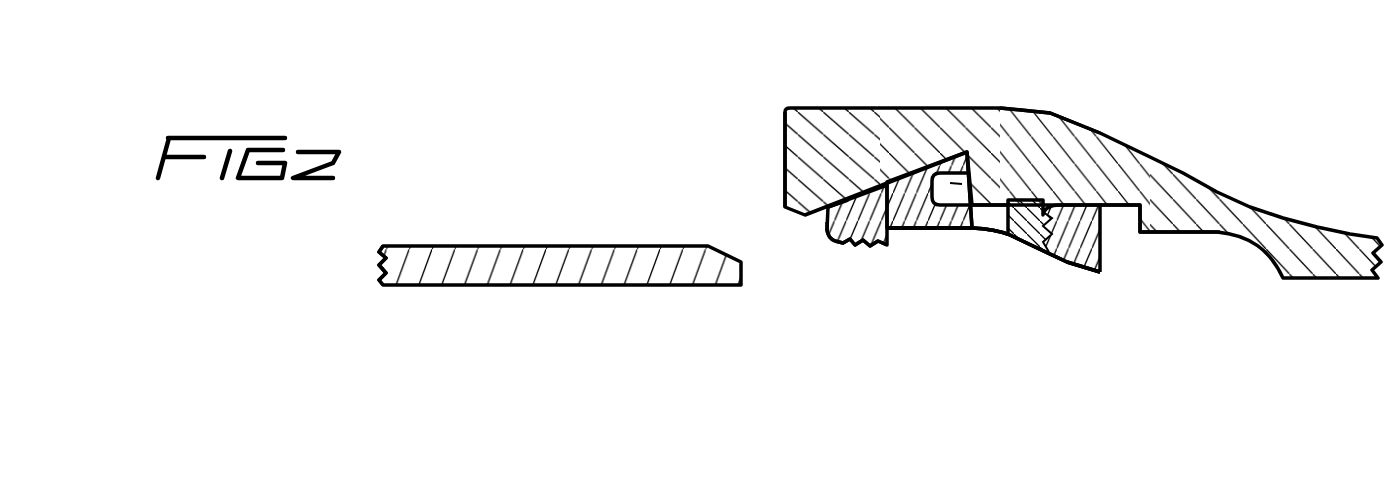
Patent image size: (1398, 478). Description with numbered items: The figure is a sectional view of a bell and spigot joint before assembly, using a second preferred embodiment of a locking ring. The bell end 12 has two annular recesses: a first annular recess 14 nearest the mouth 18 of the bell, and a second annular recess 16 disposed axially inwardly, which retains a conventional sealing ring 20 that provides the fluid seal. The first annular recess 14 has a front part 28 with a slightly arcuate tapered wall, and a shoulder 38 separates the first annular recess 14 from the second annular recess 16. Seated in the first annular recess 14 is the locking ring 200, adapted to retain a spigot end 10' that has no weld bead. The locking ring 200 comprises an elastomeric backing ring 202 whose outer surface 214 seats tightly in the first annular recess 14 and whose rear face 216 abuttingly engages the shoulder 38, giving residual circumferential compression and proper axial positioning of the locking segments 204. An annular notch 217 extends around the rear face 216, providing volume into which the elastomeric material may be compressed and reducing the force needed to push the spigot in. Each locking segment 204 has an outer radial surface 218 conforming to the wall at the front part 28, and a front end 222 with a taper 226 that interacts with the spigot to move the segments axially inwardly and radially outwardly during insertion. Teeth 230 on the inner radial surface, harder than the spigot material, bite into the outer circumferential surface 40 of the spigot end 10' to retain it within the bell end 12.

The bell end 12 is at (842, 108).
The first annular recess 14 is at (907, 158).
The second annular recess 16 is at (1103, 205).
The mouth 18 is at (791, 344).
The sealing ring 20 is at (1082, 274).
The front part of recess 28 is at (784, 160).
The shoulder 38 is at (980, 200).
The outer circumferential surface 40 is at (548, 246).
The spigot end 10' is at (330, 273).
The locking ring 200 is at (918, 255).
The elastomeric backing ring 202 is at (974, 214).
The locking segment 204 is at (892, 230).
The outer surface of the backing ring 214 is at (941, 160).
The rear face 216 is at (983, 240).
The annular notch 217 is at (965, 180).
The outer radial surface 218 is at (827, 222).
The front end 222 is at (826, 204).
The taper 226 is at (833, 247).
The teeth 230 is at (871, 248).